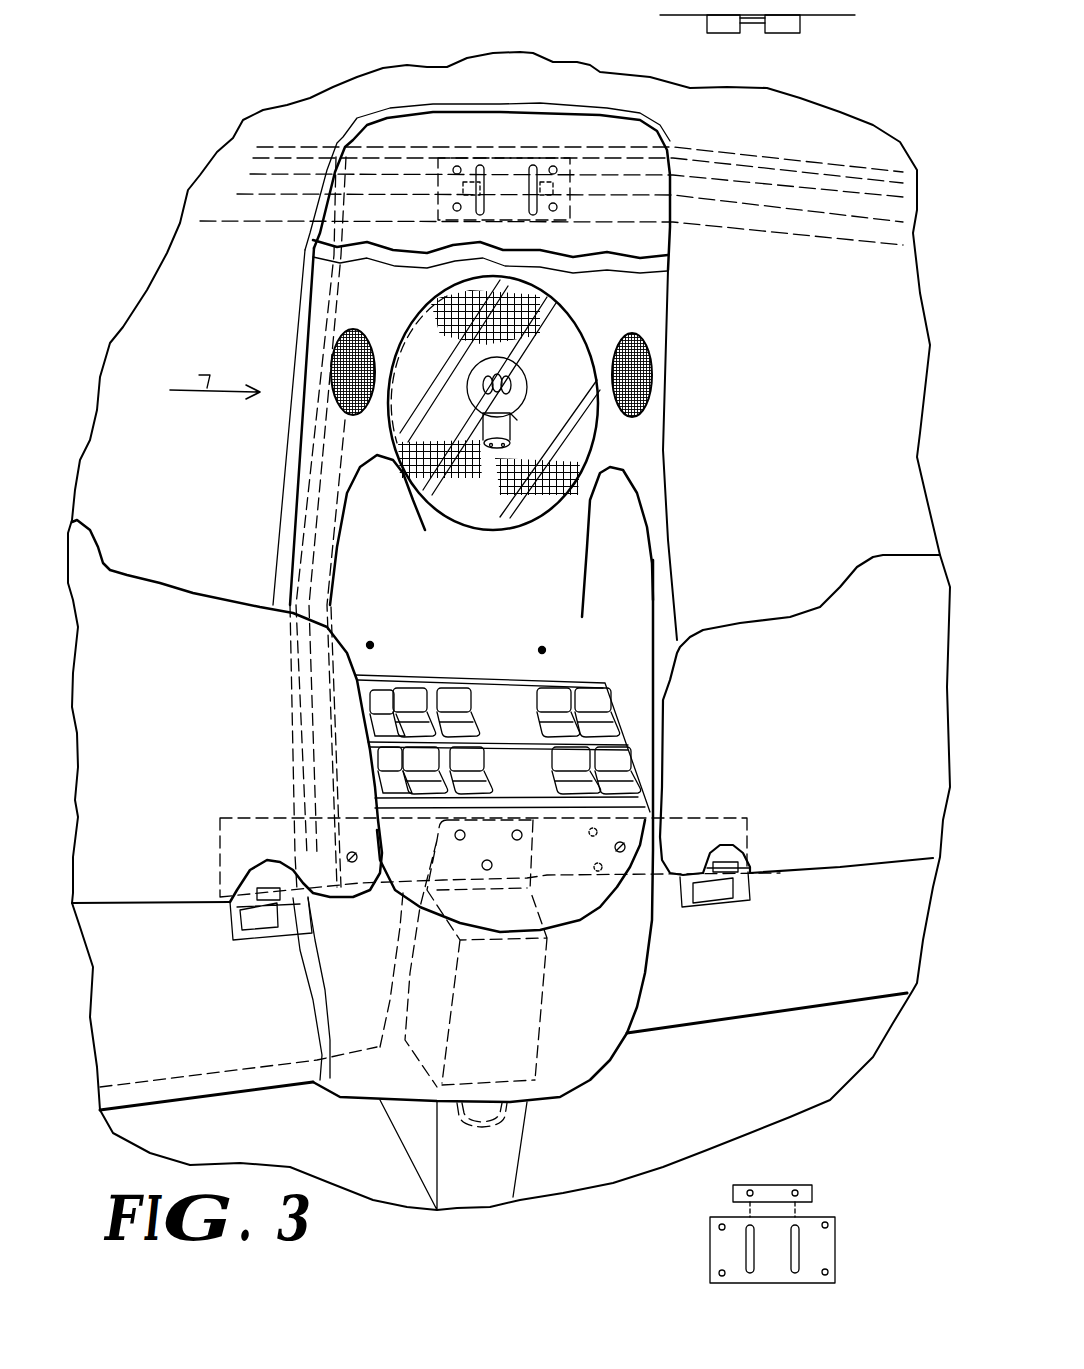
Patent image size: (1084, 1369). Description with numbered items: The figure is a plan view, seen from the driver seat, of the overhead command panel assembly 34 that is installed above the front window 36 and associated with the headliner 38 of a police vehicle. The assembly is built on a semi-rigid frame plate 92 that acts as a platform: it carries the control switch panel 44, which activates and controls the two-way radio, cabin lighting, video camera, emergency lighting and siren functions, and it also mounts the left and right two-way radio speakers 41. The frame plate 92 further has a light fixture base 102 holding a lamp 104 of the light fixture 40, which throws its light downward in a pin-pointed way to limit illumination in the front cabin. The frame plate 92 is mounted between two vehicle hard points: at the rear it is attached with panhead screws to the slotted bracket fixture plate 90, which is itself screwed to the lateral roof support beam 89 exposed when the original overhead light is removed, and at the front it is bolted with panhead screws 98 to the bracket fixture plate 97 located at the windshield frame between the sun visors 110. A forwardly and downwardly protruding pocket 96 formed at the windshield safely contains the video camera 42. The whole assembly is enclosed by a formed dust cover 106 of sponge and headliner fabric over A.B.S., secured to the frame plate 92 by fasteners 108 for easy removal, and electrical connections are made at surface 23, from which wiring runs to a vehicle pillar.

The surface 23 is at (400, 927).
The overhead command panel assembly 34 is at (214, 380).
The front window 36 is at (263, 1130).
The headliner 38 is at (800, 437).
The light fixture 40 is at (605, 430).
The two-way radio speakers 41 is at (338, 395).
The video camera 42 is at (527, 1030).
The control switch panel 44 is at (497, 703).
The lateral roof support beam 89 is at (793, 37).
The bracket fixture plate 90 is at (567, 172).
The frame plate 92 is at (310, 470).
The pocket 96 is at (343, 970).
The bracket fixture plate 97 is at (227, 933).
The panhead screws 98 is at (352, 855).
The light fixture base 102 is at (417, 307).
The lamp 104 is at (517, 397).
The dust cover 106 is at (353, 305).
The fasteners 108 is at (373, 643).
The sun visors 110 is at (157, 863).